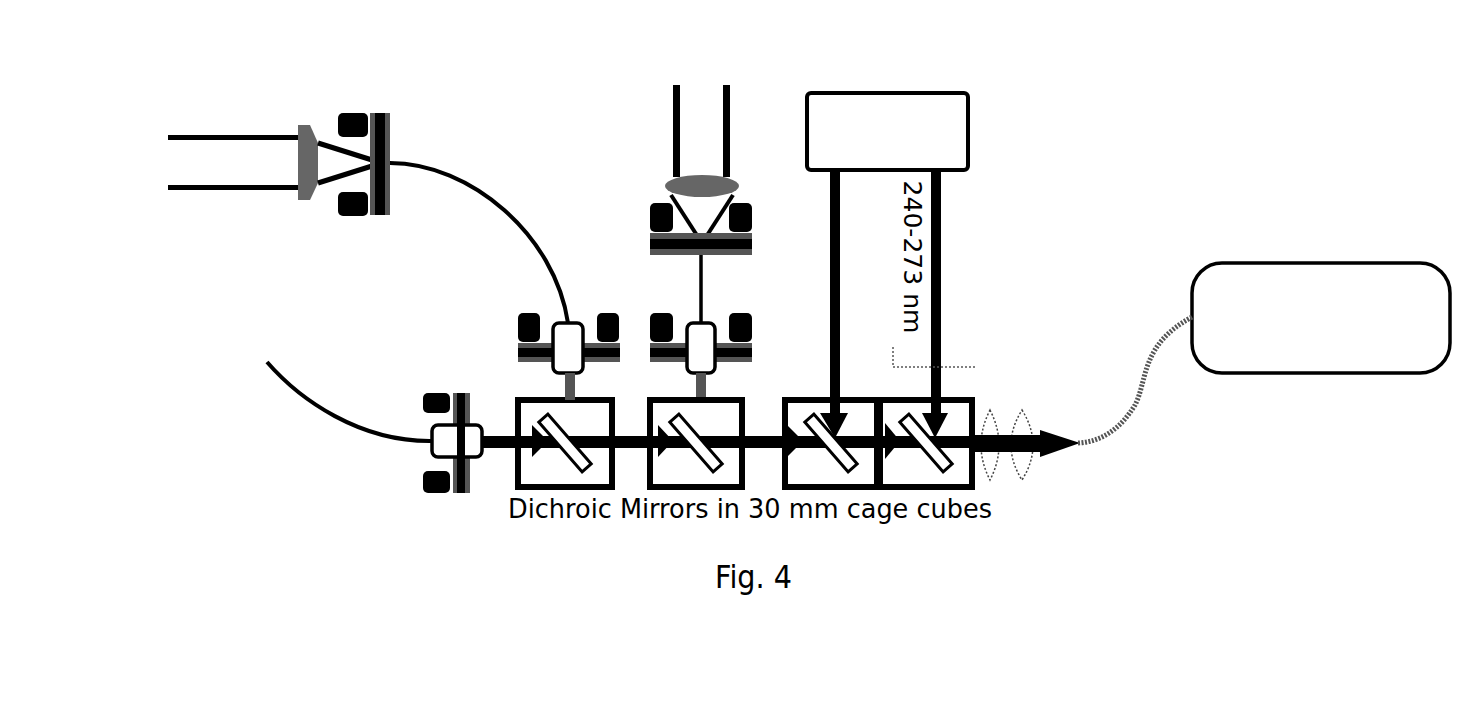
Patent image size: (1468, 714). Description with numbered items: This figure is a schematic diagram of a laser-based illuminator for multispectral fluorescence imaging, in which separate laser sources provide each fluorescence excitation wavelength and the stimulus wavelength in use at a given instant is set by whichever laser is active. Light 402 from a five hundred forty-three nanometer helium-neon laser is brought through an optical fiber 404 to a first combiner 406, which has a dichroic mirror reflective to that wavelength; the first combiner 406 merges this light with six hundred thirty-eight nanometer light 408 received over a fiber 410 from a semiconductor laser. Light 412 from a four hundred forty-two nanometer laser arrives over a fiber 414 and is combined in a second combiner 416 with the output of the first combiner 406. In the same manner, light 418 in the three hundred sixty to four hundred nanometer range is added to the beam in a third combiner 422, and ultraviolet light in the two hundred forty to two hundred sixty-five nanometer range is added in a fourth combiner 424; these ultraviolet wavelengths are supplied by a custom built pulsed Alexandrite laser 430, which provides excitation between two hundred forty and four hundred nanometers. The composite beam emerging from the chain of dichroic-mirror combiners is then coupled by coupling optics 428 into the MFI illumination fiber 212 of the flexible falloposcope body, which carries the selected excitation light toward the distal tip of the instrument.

The light 402 is at (173, 150).
The optical fiber 404 is at (455, 177).
The first combiner 406 is at (522, 397).
The 638 nm light 408 is at (423, 310).
The fiber 410 is at (313, 407).
The light 412 is at (715, 113).
The fiber 414 is at (702, 282).
The second combiner 416 is at (743, 410).
The light 418 is at (825, 332).
The third combiner 422 is at (858, 405).
The fourth combiner 424 is at (973, 392).
The coupling optics 428 is at (1078, 448).
The pulsed Alexandrite laser 430 is at (968, 168).
The MFI illumination fiber 212 is at (1162, 343).